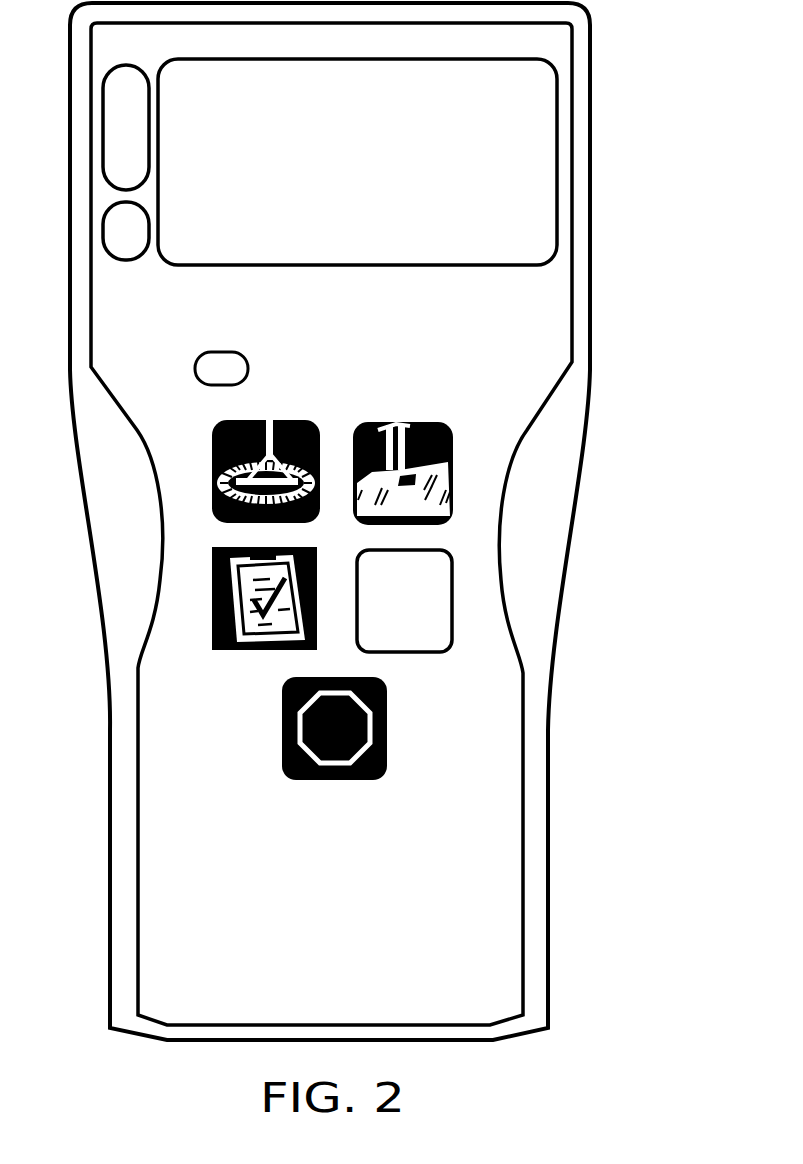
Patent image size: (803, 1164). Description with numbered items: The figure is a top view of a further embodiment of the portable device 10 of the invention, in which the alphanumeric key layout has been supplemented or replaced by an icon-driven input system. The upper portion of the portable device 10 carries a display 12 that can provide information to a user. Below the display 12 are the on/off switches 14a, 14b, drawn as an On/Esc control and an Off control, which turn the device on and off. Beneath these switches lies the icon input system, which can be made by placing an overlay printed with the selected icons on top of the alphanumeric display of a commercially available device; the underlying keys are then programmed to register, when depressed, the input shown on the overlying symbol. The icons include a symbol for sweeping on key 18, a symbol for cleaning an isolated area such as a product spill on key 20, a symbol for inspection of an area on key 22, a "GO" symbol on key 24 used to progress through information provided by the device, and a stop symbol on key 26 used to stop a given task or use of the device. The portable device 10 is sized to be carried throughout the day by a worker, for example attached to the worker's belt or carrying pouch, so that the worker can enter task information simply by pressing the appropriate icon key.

The portable device 10 is at (628, 431).
The display 12 is at (530, 154).
The on/off switch 14a is at (258, 309).
The on/off switch 14b is at (250, 369).
The key 18 is at (213, 441).
The key 20 is at (428, 422).
The key 22 is at (211, 643).
The key 24 is at (453, 640).
The key 26 is at (387, 772).